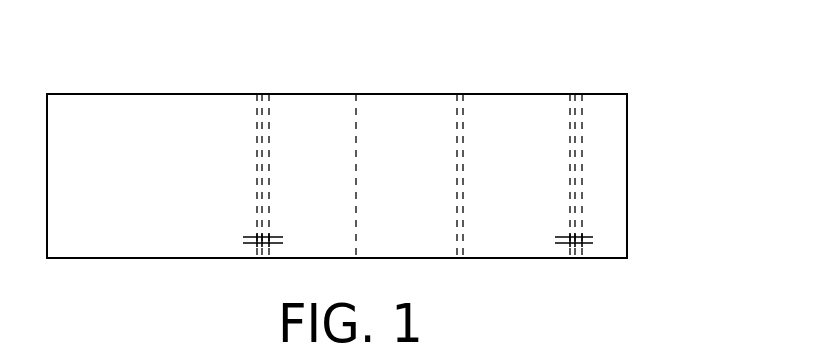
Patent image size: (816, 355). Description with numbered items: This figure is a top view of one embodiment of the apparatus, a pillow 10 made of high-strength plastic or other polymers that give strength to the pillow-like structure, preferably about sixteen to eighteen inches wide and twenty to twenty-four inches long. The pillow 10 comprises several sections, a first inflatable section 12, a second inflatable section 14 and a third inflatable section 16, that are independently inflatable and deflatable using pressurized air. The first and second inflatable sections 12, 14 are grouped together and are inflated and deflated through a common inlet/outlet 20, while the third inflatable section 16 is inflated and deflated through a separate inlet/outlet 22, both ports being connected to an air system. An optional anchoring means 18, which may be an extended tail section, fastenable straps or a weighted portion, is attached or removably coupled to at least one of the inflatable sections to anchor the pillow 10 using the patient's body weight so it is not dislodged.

The pillow 10 is at (601, 73).
The first inflatable section 12 is at (310, 112).
The second inflatable section 14 is at (412, 112).
The third inflatable section 16 is at (518, 112).
The anchoring means 18 is at (137, 133).
The inlet/outlet 20 is at (243, 238).
The inlet/outlet 22 is at (595, 238).